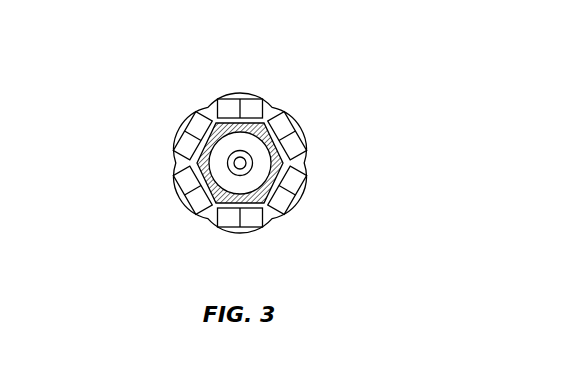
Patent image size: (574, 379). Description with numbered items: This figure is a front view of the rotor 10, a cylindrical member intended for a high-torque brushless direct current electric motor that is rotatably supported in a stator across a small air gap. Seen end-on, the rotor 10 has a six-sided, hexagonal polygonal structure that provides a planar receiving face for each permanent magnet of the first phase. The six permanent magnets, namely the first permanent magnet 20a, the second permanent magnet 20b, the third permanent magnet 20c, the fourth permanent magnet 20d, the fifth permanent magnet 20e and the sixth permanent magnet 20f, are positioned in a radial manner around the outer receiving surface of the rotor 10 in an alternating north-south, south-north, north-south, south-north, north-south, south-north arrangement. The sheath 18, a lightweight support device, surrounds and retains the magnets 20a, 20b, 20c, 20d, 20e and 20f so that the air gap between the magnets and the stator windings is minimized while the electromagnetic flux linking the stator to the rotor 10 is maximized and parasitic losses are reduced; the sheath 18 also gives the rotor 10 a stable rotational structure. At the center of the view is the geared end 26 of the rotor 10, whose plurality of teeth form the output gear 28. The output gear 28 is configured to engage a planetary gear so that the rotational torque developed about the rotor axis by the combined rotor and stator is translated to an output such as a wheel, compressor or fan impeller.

The rotor 10 is at (362, 75).
The sheath 18 is at (213, 104).
The first permanent magnet 20a is at (245, 95).
The second permanent magnet 20b is at (302, 130).
The third permanent magnet 20c is at (300, 197).
The fourth permanent magnet 20d is at (240, 235).
The fifth permanent magnet 20e is at (182, 195).
The sixth permanent magnet 20f is at (182, 135).
The geared end 26 is at (212, 162).
The output gear 28 is at (283, 156).